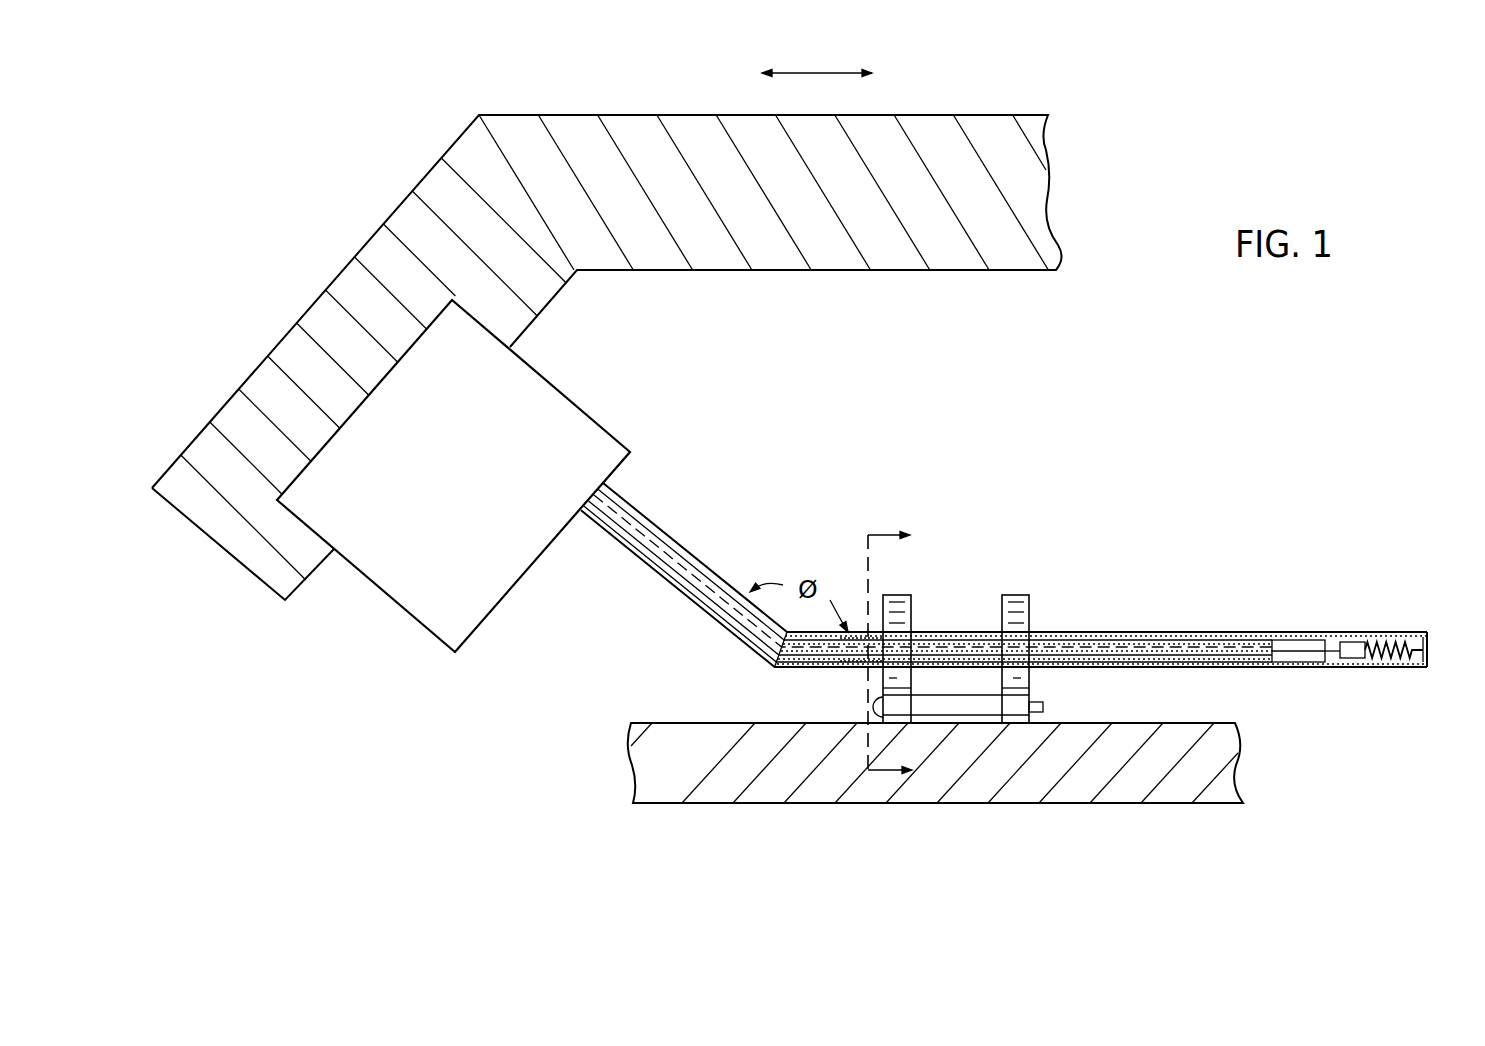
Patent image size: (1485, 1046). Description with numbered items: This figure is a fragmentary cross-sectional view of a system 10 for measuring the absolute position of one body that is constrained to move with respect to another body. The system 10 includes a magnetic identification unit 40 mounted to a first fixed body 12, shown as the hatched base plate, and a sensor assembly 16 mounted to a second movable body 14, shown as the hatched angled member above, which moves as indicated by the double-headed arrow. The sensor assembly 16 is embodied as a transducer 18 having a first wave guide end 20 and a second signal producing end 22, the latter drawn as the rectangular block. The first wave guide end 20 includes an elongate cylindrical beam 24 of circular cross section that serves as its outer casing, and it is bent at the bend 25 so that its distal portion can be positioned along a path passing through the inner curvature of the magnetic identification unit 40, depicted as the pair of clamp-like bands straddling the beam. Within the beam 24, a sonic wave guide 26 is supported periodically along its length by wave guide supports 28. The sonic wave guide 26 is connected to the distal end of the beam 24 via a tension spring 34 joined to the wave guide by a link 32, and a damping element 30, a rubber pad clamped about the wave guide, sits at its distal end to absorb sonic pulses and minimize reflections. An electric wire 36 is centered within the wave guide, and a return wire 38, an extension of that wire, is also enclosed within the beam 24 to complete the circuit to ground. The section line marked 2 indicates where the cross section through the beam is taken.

The system 10 is at (992, 465).
The first fixed body 12 is at (695, 803).
The second movable body 14 is at (1017, 260).
The sensor assembly 16 is at (427, 742).
The transducer 18 is at (568, 563).
The first wave guide end 20 is at (1155, 624).
The second signal producing end 22 is at (590, 407).
The elongate cylindrical beam 24 is at (1383, 667).
The bend 25 is at (768, 672).
The sonic wave guide 26 is at (1224, 641).
The wave guide supports 28 is at (1100, 636).
The damping element 30 is at (1297, 632).
The link 32 is at (1353, 640).
The tension spring 34 is at (1380, 650).
The electric wire 36 is at (1250, 653).
The return wire 38 is at (1143, 667).
The magnetic identification unit 40 is at (1020, 570).
The section line 2 is at (900, 652).